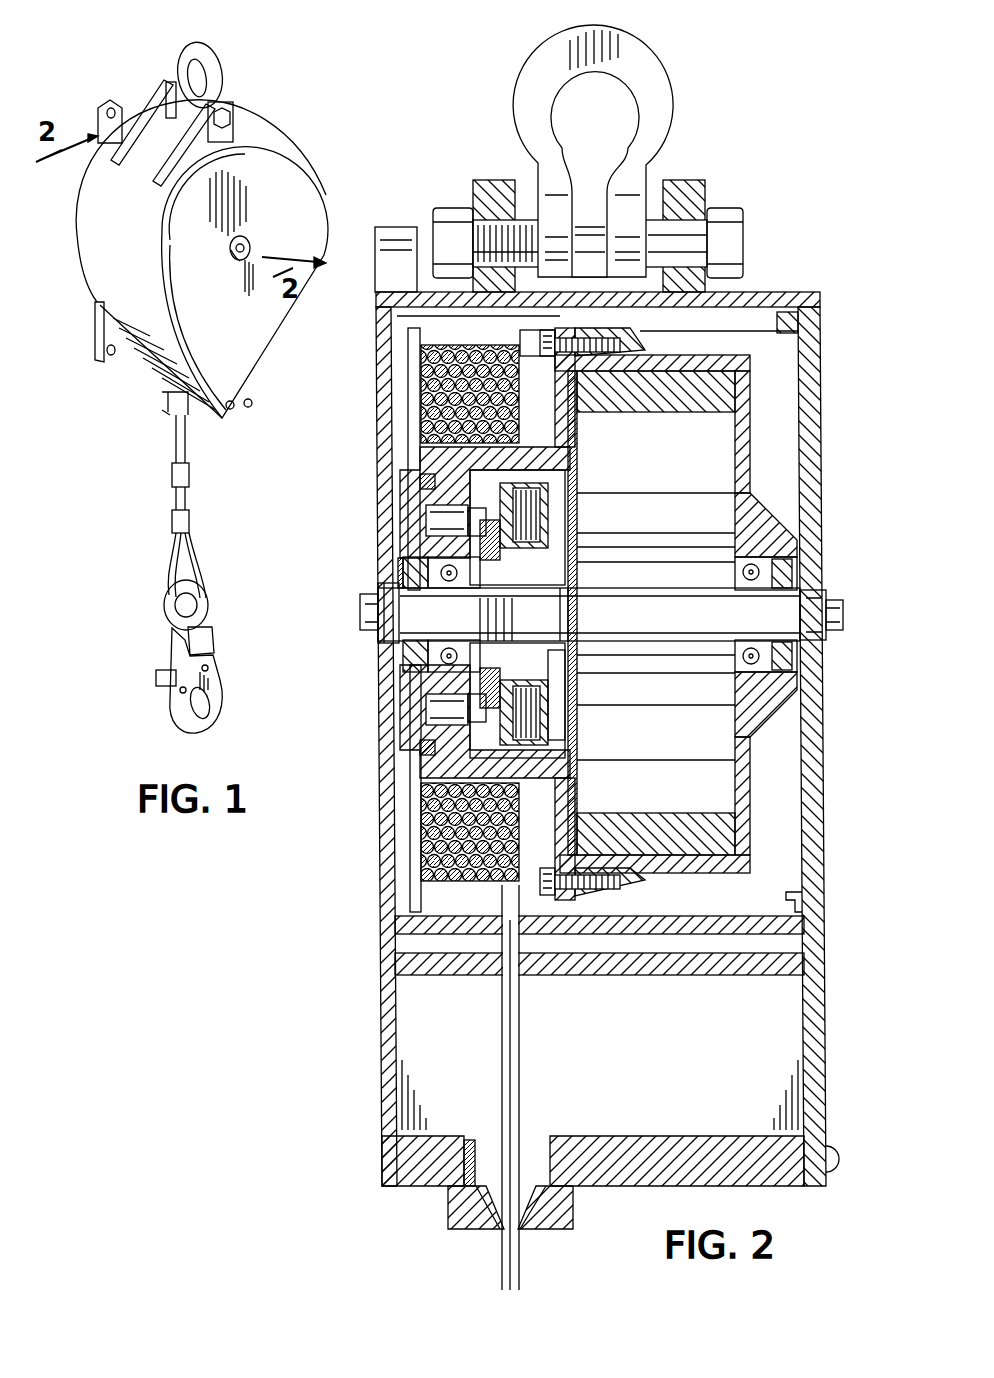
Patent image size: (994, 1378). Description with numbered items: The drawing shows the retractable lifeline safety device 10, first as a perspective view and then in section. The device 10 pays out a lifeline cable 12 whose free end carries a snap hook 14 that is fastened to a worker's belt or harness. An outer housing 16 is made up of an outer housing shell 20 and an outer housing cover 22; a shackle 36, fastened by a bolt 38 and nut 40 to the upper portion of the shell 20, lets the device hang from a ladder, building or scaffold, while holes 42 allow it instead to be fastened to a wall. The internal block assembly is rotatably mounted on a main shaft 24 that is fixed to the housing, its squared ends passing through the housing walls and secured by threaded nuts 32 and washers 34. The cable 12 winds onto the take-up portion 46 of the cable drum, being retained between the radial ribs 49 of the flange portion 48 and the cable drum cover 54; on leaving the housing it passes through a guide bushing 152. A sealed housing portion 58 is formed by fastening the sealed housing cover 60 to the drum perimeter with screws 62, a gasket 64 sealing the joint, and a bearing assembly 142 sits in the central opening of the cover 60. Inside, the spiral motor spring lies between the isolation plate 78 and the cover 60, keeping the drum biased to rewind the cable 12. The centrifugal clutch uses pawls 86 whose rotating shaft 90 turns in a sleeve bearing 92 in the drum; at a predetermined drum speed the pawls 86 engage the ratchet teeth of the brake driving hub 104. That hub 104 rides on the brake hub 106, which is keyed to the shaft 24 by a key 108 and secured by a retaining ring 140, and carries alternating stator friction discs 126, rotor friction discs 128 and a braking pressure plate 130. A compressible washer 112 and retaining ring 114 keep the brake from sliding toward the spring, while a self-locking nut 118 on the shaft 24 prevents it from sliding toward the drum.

In FIG. 1, the retractable lifeline safety device 10 is at (312, 160).
In FIG. 2, the retractable lifeline safety device 10 is at (788, 274).
In FIG. 1, the cable 12 is at (178, 448).
In FIG. 2, the cable 12 is at (405, 326).
In FIG. 1, the snap hook 14 is at (224, 626).
In FIG. 1, the outer housing 16 is at (90, 316).
In FIG. 1, the outer housing shell 20 is at (82, 257).
In FIG. 2, the outer housing shell 20 is at (382, 862).
In FIG. 1, the outer housing cover 22 is at (262, 373).
In FIG. 2, the outer housing cover 22 is at (808, 992).
In FIG. 2, the main shaft 24 is at (806, 566).
In FIG. 1, the threaded nuts 32 is at (247, 250).
In FIG. 2, the threaded nuts 32 is at (360, 620).
In FIG. 1, the washers 34 is at (240, 263).
In FIG. 2, the washers 34 is at (372, 592).
In FIG. 1, the shackle 36 is at (222, 72).
In FIG. 2, the shackle 36 is at (630, 78).
In FIG. 1, the bolt 38 is at (236, 126).
In FIG. 2, the bolt 38 is at (738, 240).
In FIG. 1, the nut 40 is at (168, 80).
In FIG. 2, the nut 40 is at (458, 210).
In FIG. 1, the holes 42 is at (108, 103).
In FIG. 2, the take-up portion 46 is at (432, 462).
In FIG. 2, the flange portion 48 is at (550, 372).
In FIG. 2, the radial ribs 49 is at (548, 410).
In FIG. 2, the cable drum cover 54 is at (410, 400).
In FIG. 2, the sealed housing portion 58 is at (772, 458).
In FIG. 2, the sealed housing cover 60 is at (746, 428).
In FIG. 2, the screws 62 is at (616, 352).
In FIG. 2, the gasket 64 is at (598, 892).
In FIG. 2, the isolation plate 78 is at (555, 440).
In FIG. 2, the pawls 86 is at (440, 522).
In FIG. 2, the rotating shaft 90 is at (476, 524).
In FIG. 2, the sleeve bearing 92 is at (430, 500).
In FIG. 2, the brake driving hub 104 is at (422, 426).
In FIG. 2, the brake hub 106 is at (415, 760).
In FIG. 2, the key 108 is at (520, 578).
In FIG. 2, the compressible washer 112 is at (566, 682).
In FIG. 2, the retaining ring 114 is at (596, 678).
In FIG. 2, the self-locking nut 118 is at (482, 574).
In FIG. 2, the stator friction discs 126 is at (536, 716).
In FIG. 2, the rotor friction discs 128 is at (570, 762).
In FIG. 2, the braking pressure plate 130 is at (546, 498).
In FIG. 2, the retaining ring 140 is at (440, 556).
In FIG. 2, the bearing assembly 142 is at (420, 680).
In FIG. 2, the guide bushing 152 is at (556, 1220).